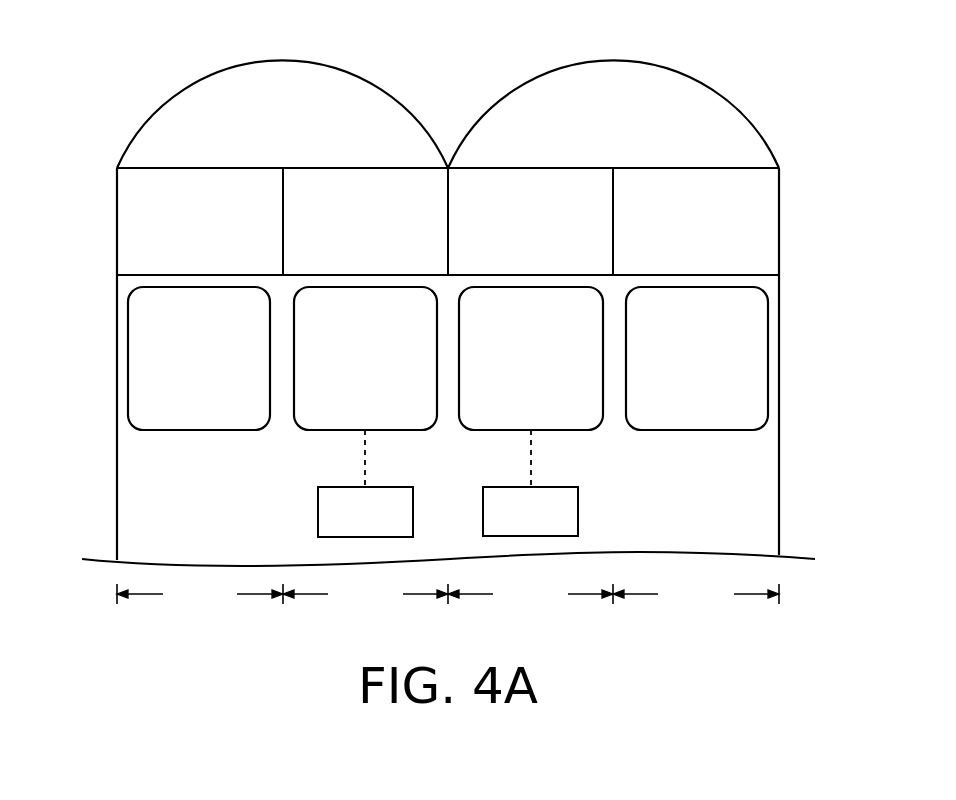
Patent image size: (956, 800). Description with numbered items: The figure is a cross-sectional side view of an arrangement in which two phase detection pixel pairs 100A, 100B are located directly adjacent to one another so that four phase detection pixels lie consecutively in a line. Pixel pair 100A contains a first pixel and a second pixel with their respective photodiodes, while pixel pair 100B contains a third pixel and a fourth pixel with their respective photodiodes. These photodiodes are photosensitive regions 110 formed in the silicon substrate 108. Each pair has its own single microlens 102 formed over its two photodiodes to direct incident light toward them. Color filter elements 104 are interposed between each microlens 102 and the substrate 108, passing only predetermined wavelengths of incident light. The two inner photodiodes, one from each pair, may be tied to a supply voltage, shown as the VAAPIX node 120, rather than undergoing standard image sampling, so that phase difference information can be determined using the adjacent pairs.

The pixel pair 100A is at (124, 53).
The pixel pair 100B is at (772, 53).
The microlens 102 is at (532, 100).
The color filter elements 104 is at (136, 217).
The silicon substrate 108 is at (128, 452).
The photosensitive regions 110 is at (147, 347).
The pixel power supply voltage (VAAPIX) node 120 is at (318, 512).